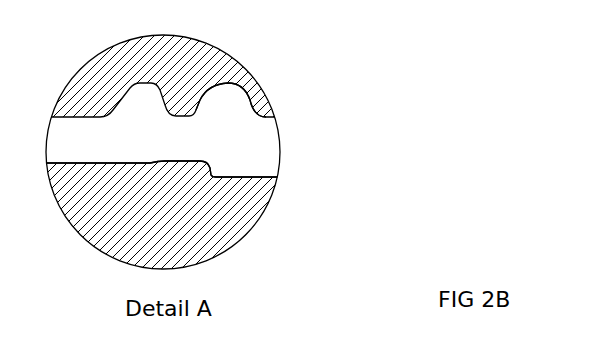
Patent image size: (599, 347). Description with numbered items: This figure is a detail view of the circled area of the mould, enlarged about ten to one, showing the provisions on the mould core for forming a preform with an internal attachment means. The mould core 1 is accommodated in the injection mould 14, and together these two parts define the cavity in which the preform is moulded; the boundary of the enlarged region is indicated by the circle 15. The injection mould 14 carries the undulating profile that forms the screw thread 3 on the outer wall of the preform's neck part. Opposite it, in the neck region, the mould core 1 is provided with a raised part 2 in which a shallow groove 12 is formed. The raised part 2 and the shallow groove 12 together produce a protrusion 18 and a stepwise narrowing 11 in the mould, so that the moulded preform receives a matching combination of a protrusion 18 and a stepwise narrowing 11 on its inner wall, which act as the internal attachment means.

The mould core 1 is at (252, 203).
The raised part 2 is at (197, 168).
The screw thread 3 is at (240, 102).
The stepwise narrowing 11 is at (198, 157).
The shallow groove 12 is at (167, 168).
The injection mould 14 is at (193, 55).
The detail region boundary 15 is at (296, 159).
The protrusion 18 is at (170, 158).